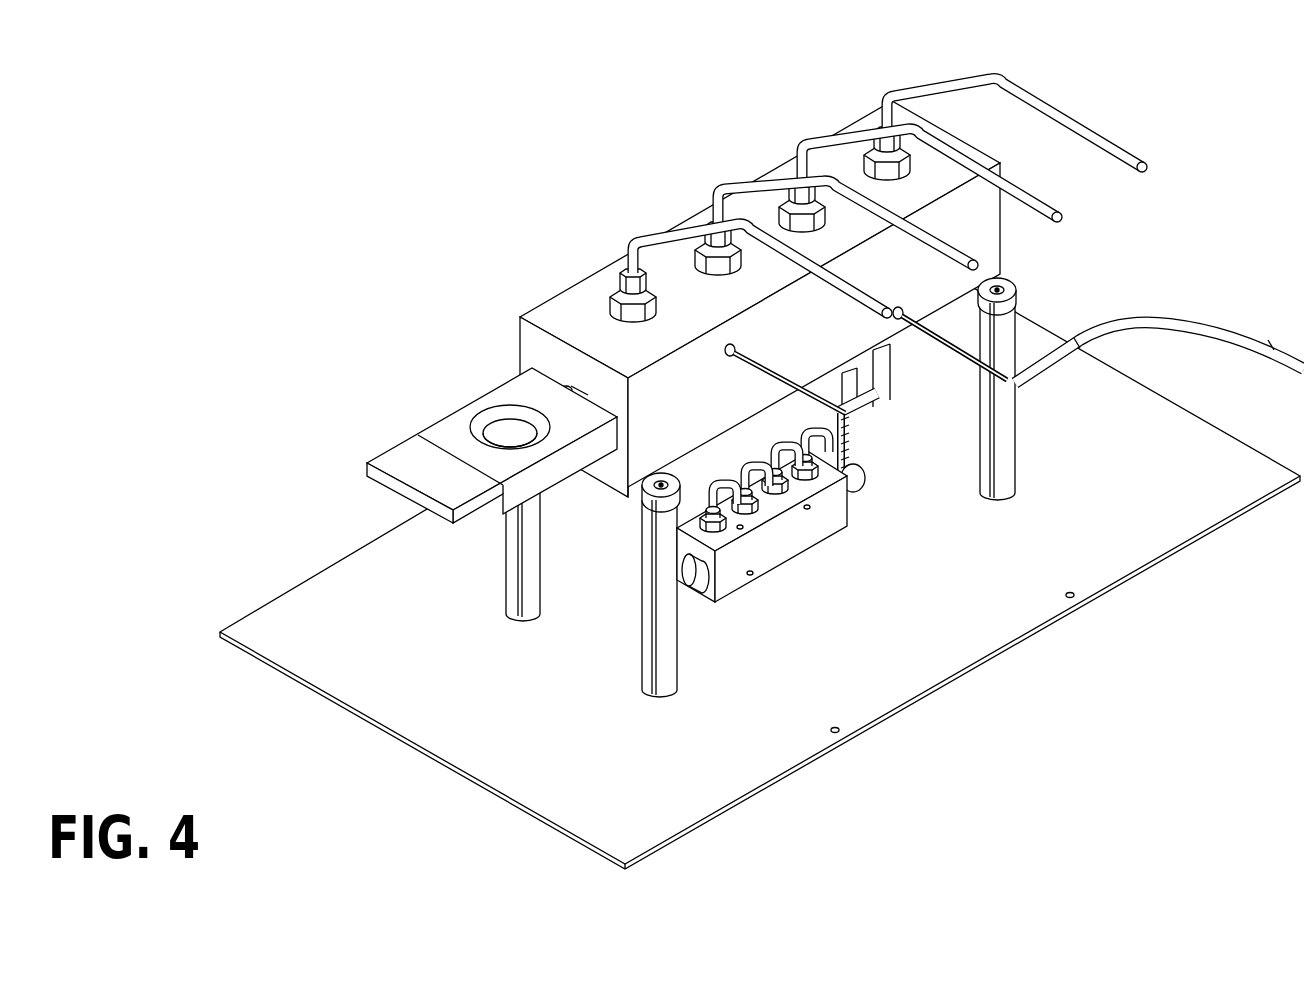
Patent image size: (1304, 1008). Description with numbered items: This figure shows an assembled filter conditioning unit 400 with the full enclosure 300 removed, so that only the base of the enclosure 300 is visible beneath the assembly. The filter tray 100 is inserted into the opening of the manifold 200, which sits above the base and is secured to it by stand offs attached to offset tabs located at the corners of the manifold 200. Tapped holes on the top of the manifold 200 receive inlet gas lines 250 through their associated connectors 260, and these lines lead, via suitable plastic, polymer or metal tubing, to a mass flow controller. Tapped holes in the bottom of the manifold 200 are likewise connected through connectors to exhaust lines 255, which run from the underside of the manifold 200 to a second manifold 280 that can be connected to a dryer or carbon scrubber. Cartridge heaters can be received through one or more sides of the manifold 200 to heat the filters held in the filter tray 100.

The filter conditioning unit 400 is at (675, 461).
The filter tray 100 is at (383, 446).
The manifold 200 is at (560, 290).
The inlet gas lines 250 is at (660, 238).
The exhaust lines 255 is at (778, 438).
The connectors 260 is at (658, 313).
The second manifold 280 is at (772, 550).
The enclosure 300 is at (1124, 587).